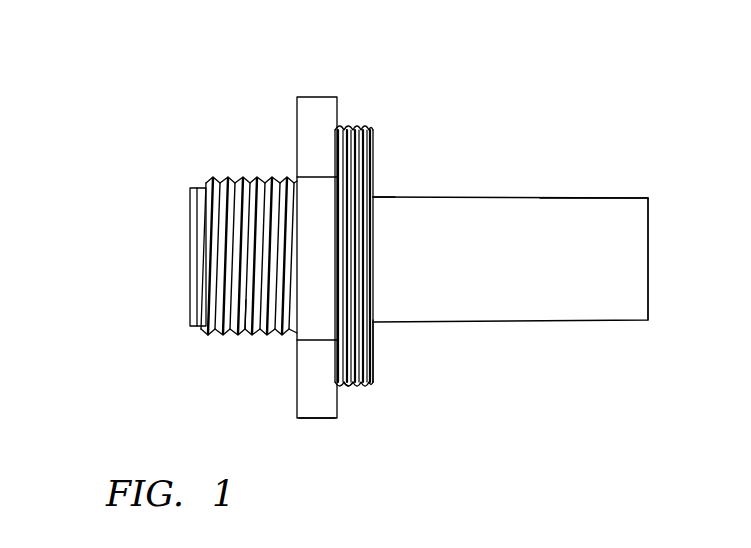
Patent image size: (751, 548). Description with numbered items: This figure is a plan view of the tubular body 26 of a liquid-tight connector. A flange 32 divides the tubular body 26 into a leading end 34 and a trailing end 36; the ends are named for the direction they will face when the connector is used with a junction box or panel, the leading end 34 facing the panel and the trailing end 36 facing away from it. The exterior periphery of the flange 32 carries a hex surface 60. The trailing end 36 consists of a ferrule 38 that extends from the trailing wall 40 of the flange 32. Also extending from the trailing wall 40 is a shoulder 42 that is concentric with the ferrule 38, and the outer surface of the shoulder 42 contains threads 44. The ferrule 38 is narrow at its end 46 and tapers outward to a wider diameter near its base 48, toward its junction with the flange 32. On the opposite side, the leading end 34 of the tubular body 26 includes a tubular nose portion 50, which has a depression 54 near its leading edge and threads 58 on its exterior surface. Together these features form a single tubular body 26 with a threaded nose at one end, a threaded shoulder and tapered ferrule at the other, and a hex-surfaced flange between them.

The tubular body 26 is at (518, 144).
The flange 32 is at (316, 107).
The leading end 34 is at (190, 230).
The trailing end 36 is at (648, 245).
The ferrule 38 is at (549, 270).
The trailing wall 40 is at (337, 115).
The shoulder 42 is at (375, 347).
The threads 44 is at (350, 387).
The end 46 is at (575, 207).
The base 48 is at (376, 197).
The tubular nose portion 50 is at (234, 150).
The depression 54 is at (203, 340).
The threads 58 is at (247, 340).
The hex surface 60 is at (320, 410).